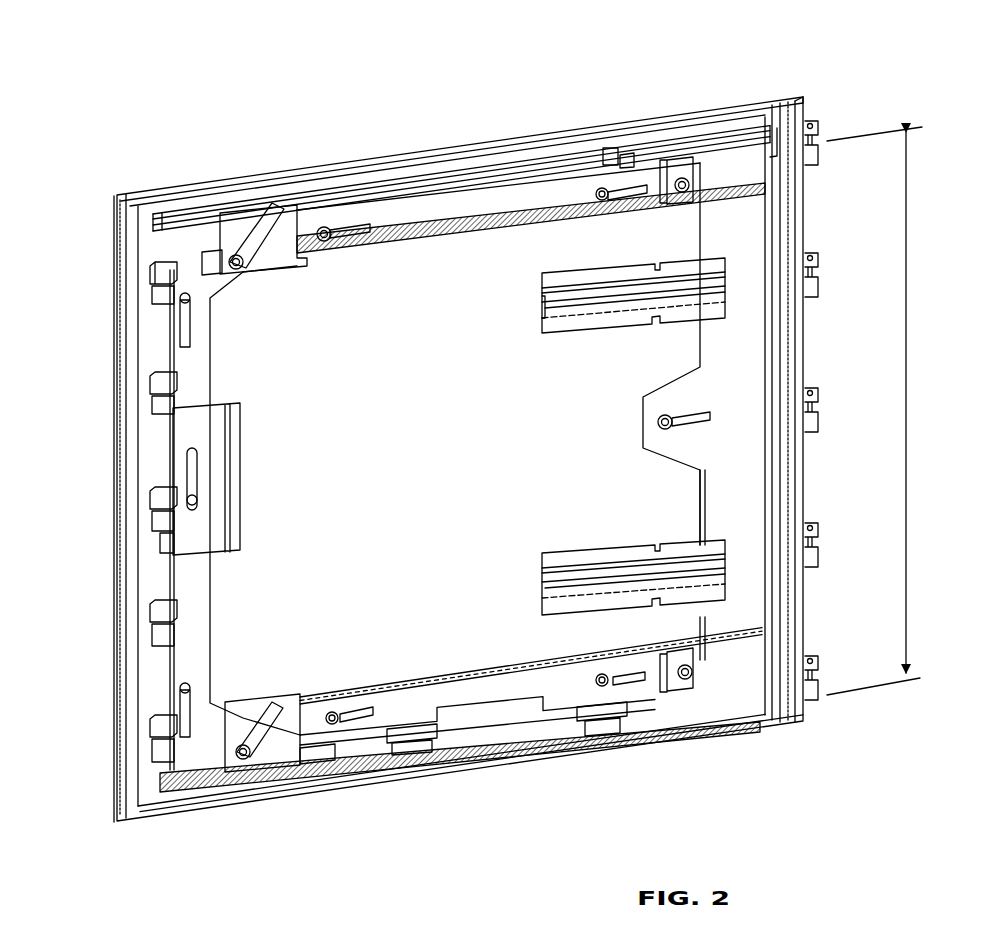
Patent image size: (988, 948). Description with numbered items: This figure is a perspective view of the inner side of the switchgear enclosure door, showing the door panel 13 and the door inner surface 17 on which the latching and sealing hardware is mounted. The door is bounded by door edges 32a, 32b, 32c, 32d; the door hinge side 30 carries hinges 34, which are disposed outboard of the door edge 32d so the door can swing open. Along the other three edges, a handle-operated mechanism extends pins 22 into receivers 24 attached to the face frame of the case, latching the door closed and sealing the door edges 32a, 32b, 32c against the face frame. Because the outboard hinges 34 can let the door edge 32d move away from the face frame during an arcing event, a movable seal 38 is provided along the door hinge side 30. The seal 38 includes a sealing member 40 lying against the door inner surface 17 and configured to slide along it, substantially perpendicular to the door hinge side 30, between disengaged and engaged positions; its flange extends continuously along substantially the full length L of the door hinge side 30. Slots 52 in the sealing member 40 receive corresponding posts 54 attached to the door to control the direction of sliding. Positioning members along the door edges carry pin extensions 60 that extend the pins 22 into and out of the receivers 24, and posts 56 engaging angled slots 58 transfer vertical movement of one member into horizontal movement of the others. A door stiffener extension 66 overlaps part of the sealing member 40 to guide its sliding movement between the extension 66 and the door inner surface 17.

The door panel 13 is at (335, 632).
The door inner surface 17 is at (443, 548).
The pins 22 is at (613, 158).
The receivers 24 is at (628, 160).
The door hinge side 30 is at (814, 235).
The door edge 32a is at (437, 158).
The door edge 32b is at (132, 663).
The door edge 32c is at (418, 772).
The door edge 32d is at (798, 357).
The hinges 34 is at (815, 428).
The movable seal 38 is at (817, 472).
The sealing member 40 is at (740, 650).
The slots 52 is at (360, 232).
The posts 54 is at (328, 241).
The posts 56 is at (263, 262).
The slots 58 is at (243, 260).
The pin extensions 60 is at (162, 378).
The door stiffener extension 66 is at (692, 260).
The length L is at (906, 545).